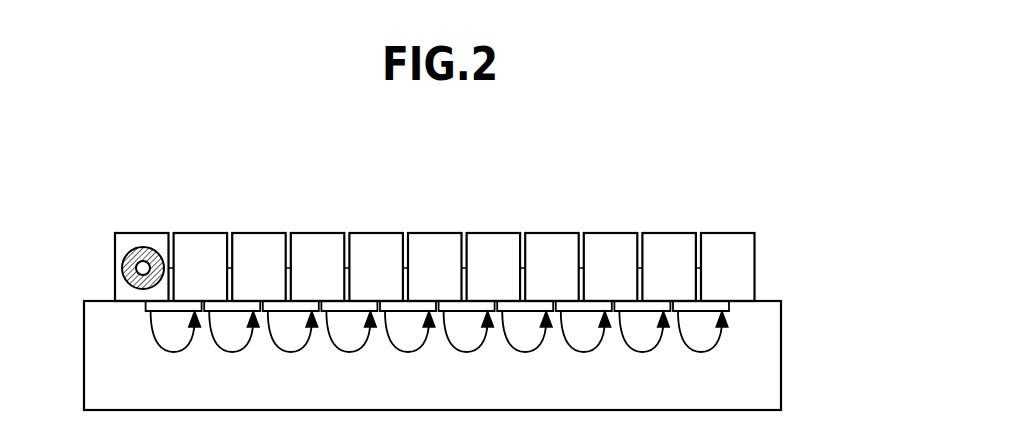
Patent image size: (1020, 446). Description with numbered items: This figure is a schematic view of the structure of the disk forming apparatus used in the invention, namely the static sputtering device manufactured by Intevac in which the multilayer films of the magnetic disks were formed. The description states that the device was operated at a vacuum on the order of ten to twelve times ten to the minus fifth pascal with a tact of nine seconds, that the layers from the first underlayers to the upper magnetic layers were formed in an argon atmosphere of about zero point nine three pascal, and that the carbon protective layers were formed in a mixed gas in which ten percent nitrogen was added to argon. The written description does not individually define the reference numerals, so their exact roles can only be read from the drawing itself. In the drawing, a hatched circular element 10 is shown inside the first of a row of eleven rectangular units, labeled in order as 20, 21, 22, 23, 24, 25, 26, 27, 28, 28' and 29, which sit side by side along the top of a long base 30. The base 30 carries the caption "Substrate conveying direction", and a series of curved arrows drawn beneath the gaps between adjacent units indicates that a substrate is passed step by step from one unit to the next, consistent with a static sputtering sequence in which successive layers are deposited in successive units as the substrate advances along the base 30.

The roll-shaped member 10 is at (124, 262).
The processing chamber 20 is at (137, 242).
The processing chamber 21 is at (197, 242).
The processing chamber 22 is at (256, 242).
The processing chamber 23 is at (315, 242).
The processing chamber 24 is at (375, 242).
The processing chamber 25 is at (435, 242).
The processing chamber 26 is at (495, 242).
The processing chamber 27 is at (555, 242).
The processing chamber 28 is at (615, 227).
The processing chamber 28' is at (673, 227).
The processing chamber 29 is at (732, 242).
The substrate conveying stage 30 is at (769, 357).